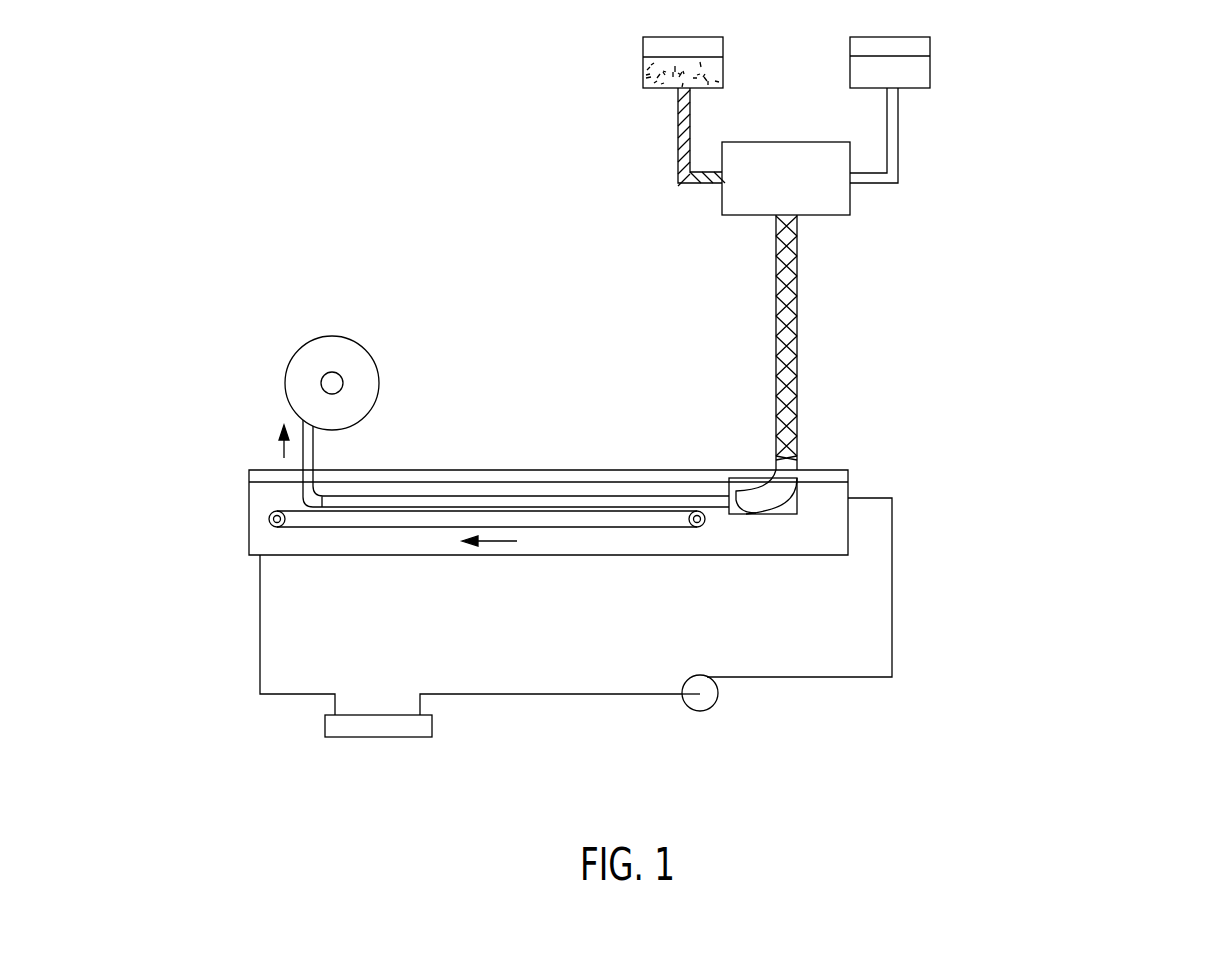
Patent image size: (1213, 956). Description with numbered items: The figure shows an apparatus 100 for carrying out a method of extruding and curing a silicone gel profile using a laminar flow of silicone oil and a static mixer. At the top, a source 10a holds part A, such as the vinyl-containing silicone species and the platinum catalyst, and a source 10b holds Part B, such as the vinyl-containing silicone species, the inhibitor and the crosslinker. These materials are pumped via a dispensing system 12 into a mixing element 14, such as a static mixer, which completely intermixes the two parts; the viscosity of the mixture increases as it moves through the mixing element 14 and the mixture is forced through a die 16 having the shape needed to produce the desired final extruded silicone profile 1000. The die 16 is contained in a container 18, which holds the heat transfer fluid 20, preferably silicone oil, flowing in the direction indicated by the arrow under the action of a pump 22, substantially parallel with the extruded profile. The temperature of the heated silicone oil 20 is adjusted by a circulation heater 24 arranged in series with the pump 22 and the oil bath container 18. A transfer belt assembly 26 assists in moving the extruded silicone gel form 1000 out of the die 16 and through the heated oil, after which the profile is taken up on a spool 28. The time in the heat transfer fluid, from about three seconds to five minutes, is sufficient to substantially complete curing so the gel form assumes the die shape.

The apparatus 100 is at (1095, 290).
The source for part A 10a is at (723, 45).
The source for Part B 10b is at (925, 47).
The dispensing system 12 is at (850, 203).
The mixing element 14 is at (797, 347).
The die 16 is at (790, 500).
The container 18 is at (848, 555).
The heat transfer fluid 20 is at (674, 543).
The pump 22 is at (707, 710).
The circulation heater 24 is at (432, 728).
The transfer belt assembly 26 is at (270, 523).
The spool 28 is at (378, 366).
The extruded silicone profile 1000 is at (550, 507).